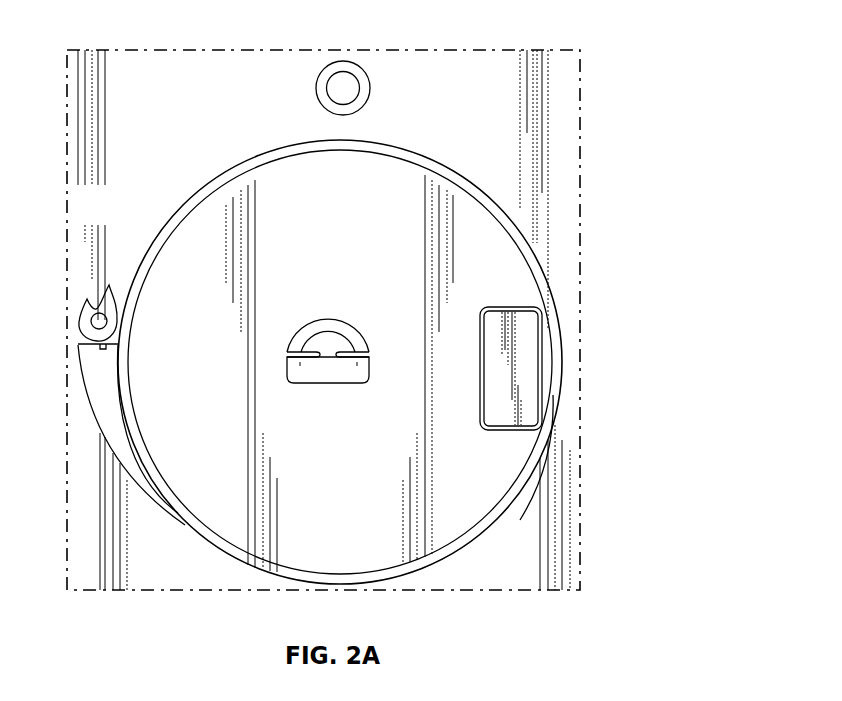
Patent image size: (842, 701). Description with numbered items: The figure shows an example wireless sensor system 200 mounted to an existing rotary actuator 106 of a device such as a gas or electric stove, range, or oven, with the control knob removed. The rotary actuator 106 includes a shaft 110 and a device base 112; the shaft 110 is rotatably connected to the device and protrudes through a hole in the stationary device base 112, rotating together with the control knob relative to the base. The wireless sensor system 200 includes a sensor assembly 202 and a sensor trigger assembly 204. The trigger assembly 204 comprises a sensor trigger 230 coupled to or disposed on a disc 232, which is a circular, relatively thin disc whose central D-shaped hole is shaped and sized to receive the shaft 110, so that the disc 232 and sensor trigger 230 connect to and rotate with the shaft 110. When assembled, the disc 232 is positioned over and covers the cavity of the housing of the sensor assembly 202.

The wireless sensor system 200 is at (462, 42).
The rotary actuator 106 is at (607, 172).
The device base 112 is at (153, 563).
The sensor assembly 202 is at (164, 227).
The sensor trigger assembly 204 is at (538, 273).
The disc 232 is at (518, 443).
The sensor trigger 230 is at (526, 380).
The shaft 110 is at (312, 372).